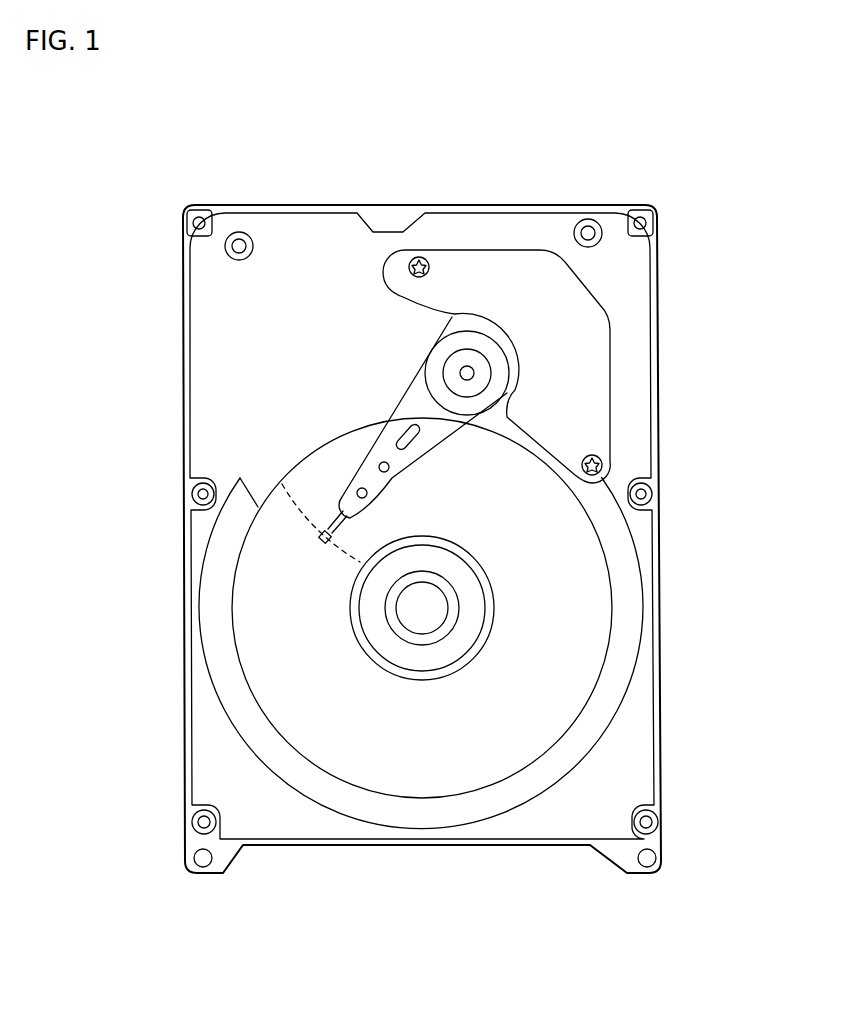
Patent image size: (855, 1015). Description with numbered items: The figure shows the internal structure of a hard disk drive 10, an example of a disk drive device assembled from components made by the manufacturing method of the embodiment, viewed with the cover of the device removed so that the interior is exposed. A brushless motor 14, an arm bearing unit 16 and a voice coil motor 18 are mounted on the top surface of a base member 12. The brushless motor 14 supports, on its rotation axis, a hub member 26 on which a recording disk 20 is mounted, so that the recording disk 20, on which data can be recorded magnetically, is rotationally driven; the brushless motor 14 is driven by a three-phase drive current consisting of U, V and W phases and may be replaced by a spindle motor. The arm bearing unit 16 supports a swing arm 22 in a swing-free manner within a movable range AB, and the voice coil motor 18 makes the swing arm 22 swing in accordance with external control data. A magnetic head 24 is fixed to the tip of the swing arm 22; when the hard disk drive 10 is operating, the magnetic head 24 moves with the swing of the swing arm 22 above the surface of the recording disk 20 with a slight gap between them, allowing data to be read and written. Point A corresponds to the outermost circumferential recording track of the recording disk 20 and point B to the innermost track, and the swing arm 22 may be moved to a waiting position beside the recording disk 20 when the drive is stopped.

The hard disk drive 10 is at (520, 174).
The base member 12 is at (661, 291).
The brushless motor 14 is at (484, 586).
The arm bearing unit 16 is at (513, 387).
The voice coil motor 18 is at (582, 283).
The recording disk 20 is at (585, 637).
The swing arm 22 is at (400, 405).
The magnetic head 24 is at (322, 537).
The hub member 26 is at (460, 637).